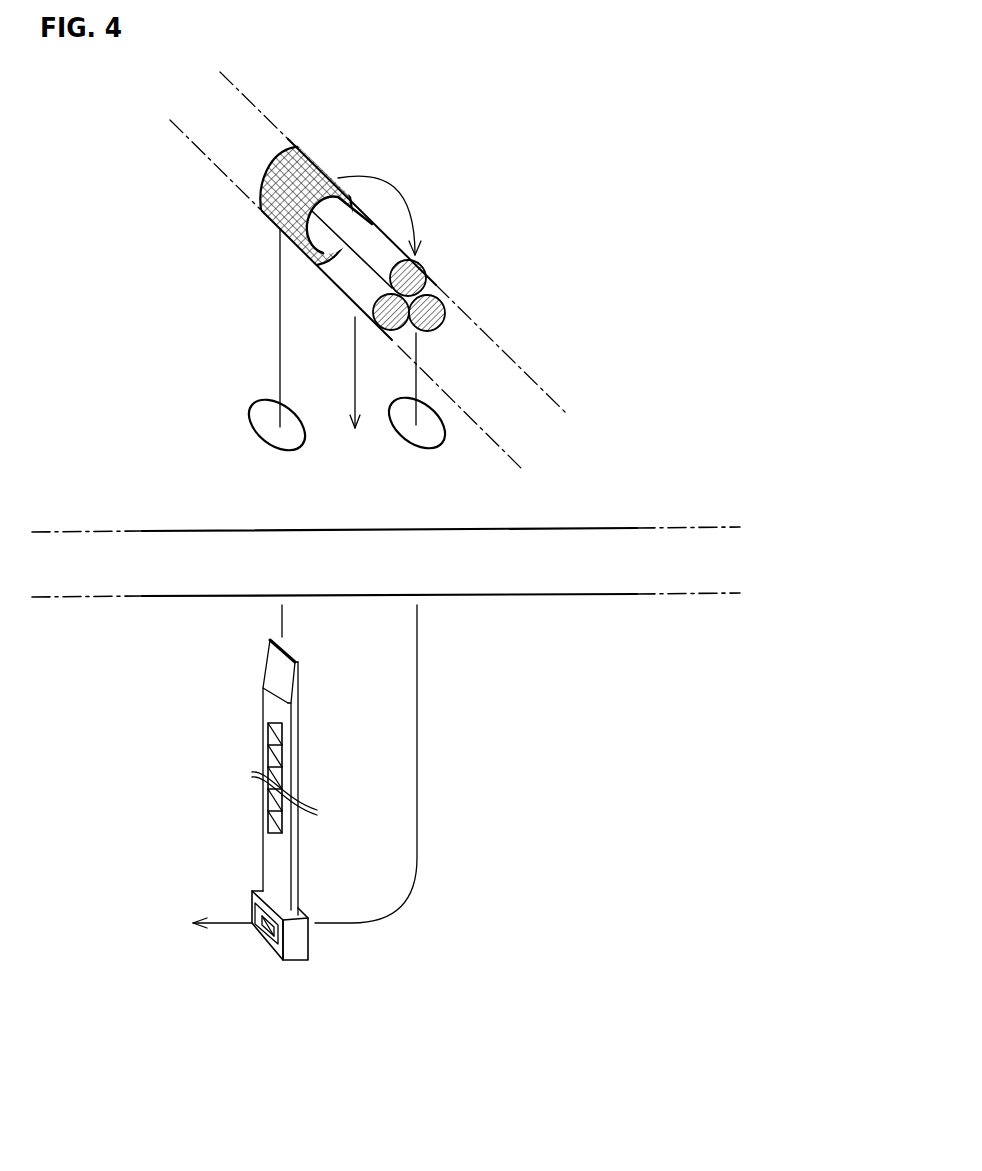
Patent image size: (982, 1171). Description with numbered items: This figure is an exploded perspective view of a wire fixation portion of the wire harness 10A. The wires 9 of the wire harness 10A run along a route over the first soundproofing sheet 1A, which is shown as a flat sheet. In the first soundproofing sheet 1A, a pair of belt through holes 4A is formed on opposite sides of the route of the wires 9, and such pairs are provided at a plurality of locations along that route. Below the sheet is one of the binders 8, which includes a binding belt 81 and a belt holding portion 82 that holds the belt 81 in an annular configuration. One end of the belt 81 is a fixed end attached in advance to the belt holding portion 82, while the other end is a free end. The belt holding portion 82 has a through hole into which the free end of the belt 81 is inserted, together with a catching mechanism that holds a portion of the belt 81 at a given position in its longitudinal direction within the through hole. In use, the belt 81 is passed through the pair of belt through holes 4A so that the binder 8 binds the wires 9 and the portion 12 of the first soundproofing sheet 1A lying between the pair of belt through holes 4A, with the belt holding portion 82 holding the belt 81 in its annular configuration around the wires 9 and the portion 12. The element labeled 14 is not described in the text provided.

The wire harness 10A is at (556, 180).
The wires 9 is at (425, 265).
The lead wires 14 is at (240, 330).
The belt through holes 4A is at (260, 403).
The portion between a pair of belt through holes 12 is at (343, 427).
The first soundproofing sheet 1A is at (612, 485).
The binder 8 is at (305, 783).
The binding belt 81 is at (298, 772).
The belt holding portion 82 is at (308, 942).